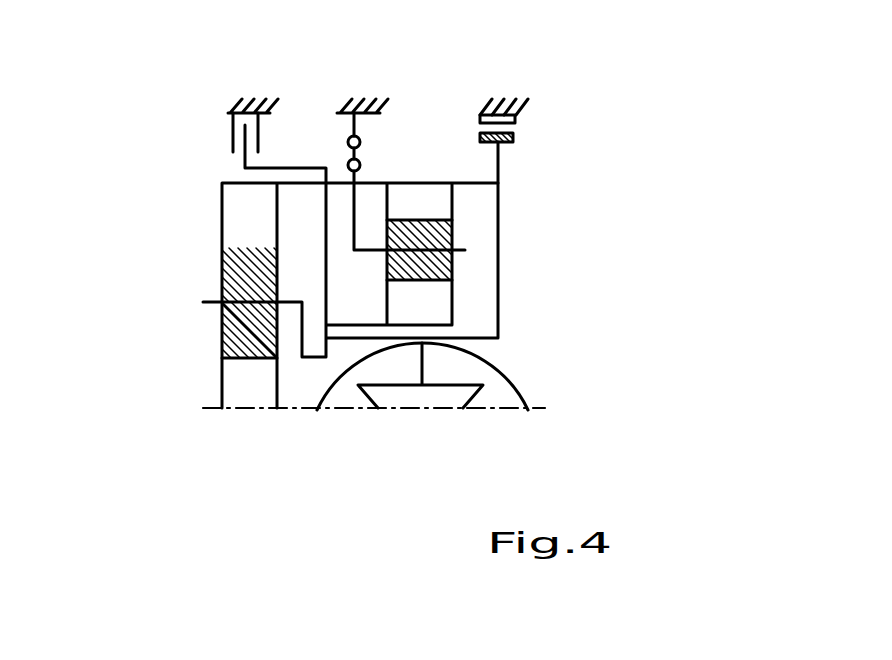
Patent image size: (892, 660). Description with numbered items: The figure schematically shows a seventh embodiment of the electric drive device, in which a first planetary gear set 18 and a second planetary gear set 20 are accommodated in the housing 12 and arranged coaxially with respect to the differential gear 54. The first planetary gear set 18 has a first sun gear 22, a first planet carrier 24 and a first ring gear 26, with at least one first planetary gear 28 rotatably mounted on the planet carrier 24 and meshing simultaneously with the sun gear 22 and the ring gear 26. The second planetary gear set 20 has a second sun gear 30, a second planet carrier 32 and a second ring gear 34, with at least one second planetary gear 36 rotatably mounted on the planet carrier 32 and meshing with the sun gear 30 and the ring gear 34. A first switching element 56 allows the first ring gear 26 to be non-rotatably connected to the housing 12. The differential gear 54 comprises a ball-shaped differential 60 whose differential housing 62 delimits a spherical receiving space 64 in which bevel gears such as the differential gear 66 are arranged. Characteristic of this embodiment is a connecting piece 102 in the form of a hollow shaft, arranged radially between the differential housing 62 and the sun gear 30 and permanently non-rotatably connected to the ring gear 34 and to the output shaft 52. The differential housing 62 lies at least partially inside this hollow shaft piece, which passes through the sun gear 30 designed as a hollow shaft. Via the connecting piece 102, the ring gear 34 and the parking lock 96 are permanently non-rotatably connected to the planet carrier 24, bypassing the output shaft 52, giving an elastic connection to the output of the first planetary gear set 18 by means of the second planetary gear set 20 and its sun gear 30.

The housing 12 is at (262, 99).
The first planetary gear set 18 is at (208, 195).
The second planetary gear set 20 is at (370, 138).
The first sun gear 22 is at (245, 400).
The first planet carrier 24 is at (235, 325).
The first ring gear 26 is at (228, 212).
The first planetary gear 28 is at (235, 272).
The second sun gear 30 is at (437, 303).
The second planet carrier 32 is at (368, 253).
The second ring gear 34 is at (435, 205).
The second planetary gear 36 is at (437, 267).
The output shaft 52 is at (327, 357).
The differential gear 54 is at (548, 390).
The first switching element 56 is at (223, 137).
The ball-shaped differential 60 is at (367, 420).
The differential housing 62 is at (510, 389).
The receiving space 64 is at (507, 373).
The differential gear 66 is at (397, 398).
The parking lock 96 is at (533, 98).
The connecting piece 102 is at (477, 338).